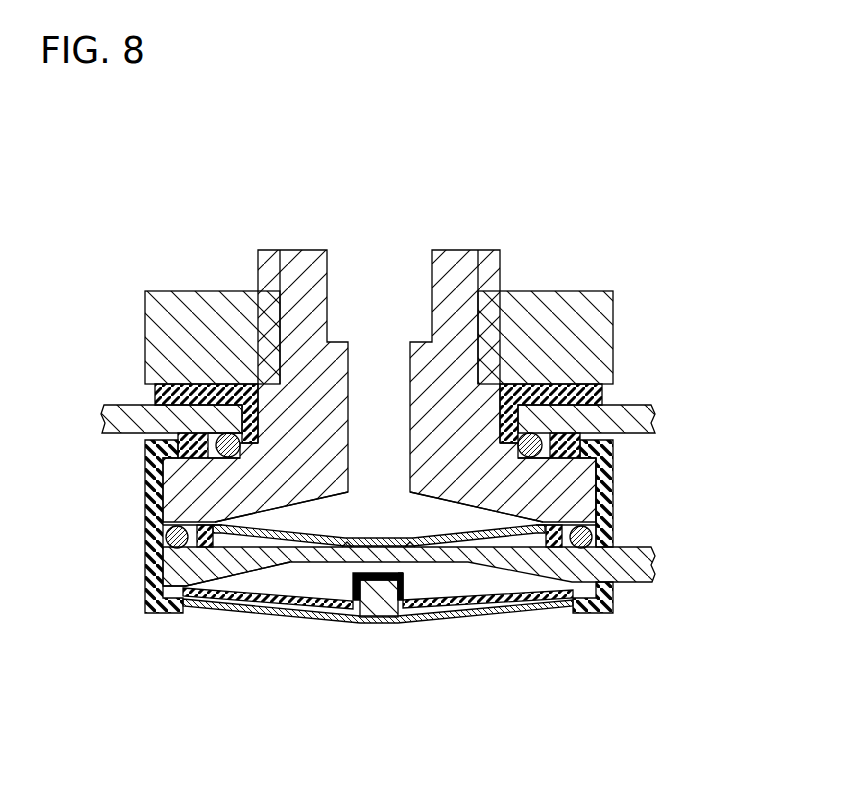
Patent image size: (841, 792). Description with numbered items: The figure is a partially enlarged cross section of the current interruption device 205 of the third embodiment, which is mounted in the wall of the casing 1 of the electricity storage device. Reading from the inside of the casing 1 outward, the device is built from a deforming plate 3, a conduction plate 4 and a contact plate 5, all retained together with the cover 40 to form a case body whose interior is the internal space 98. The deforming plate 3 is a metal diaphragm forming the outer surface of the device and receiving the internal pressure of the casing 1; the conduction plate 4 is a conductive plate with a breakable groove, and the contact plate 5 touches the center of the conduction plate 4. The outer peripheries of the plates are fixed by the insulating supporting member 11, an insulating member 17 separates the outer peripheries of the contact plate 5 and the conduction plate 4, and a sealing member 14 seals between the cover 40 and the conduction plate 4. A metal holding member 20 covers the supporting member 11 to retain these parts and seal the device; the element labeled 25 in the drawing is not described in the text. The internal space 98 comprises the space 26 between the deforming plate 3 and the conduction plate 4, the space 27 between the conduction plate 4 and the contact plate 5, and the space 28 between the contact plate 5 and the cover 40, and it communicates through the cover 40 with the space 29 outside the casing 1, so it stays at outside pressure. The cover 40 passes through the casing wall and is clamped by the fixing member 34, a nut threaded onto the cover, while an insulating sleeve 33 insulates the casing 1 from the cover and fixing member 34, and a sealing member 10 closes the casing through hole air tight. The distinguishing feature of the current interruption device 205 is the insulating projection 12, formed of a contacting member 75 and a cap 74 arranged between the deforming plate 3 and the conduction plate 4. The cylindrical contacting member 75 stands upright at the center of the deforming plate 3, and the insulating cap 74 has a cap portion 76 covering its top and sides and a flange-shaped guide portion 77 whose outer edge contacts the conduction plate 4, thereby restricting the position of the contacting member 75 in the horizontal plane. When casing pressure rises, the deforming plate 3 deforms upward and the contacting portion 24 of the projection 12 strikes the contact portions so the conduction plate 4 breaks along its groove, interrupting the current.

The casing 1 is at (655, 422).
The deforming plate 3 is at (378, 646).
The conduction plate 4 is at (285, 620).
The contact plate 5 is at (258, 598).
The sealing member 10 is at (598, 465).
The supporting member 11 is at (606, 503).
The insulating projection 12 is at (413, 580).
The sealing member 14 is at (590, 553).
The insulating member 17 is at (562, 529).
The holding member 20 is at (612, 488).
The contacting portion 24 is at (356, 574).
The casing 25 is at (123, 620).
The space 26 is at (228, 579).
The space 27 is at (230, 534).
The space 28 is at (366, 484).
The space outside the casing 29 is at (125, 276).
The insulating sleeve 33 is at (160, 394).
The fixing member 34 is at (517, 297).
The cover 40 is at (292, 268).
The cap 74 is at (397, 637).
The contacting member 75 is at (383, 612).
The cap portion 76 is at (405, 592).
The guide portion 77 is at (418, 588).
The internal space 98 is at (62, 473).
The current interruption device 205 is at (642, 266).